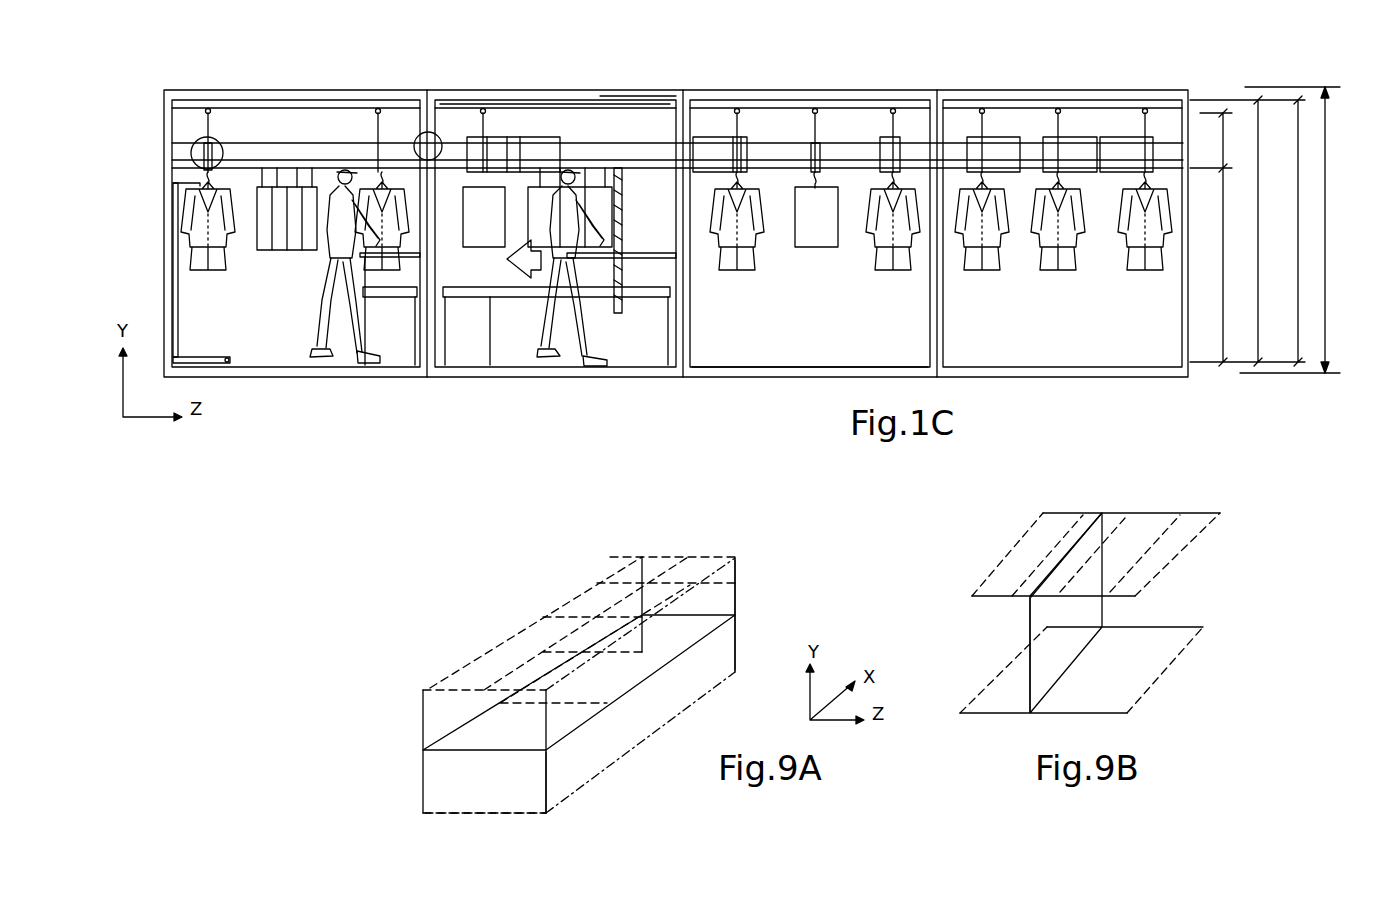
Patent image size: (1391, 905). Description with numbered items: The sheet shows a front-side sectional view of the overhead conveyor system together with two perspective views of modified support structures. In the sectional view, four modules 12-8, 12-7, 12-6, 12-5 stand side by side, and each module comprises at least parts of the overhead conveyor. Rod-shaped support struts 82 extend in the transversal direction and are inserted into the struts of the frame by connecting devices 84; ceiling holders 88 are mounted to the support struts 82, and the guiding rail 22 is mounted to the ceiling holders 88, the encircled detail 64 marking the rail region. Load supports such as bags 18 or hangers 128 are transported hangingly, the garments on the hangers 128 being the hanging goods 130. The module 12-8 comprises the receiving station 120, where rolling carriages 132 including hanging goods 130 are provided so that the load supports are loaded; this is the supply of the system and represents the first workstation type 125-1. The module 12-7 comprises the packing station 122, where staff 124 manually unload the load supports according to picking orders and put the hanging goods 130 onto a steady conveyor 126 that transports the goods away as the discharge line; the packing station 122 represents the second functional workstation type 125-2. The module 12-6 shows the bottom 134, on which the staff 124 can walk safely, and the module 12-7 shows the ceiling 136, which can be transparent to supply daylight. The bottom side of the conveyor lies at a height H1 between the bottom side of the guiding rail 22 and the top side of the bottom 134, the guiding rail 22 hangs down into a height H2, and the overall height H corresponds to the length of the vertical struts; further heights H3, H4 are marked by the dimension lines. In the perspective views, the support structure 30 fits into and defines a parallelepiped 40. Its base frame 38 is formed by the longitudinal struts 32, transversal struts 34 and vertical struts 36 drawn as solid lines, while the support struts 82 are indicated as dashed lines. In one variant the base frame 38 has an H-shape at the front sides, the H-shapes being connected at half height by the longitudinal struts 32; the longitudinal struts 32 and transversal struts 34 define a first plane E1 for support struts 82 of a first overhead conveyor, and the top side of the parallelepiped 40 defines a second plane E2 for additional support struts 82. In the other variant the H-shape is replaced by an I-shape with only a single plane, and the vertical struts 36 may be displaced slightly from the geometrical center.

In FIG. 1C, the module 12-8 is at (290, 88).
In FIG. 1C, the module 12-7 is at (556, 88).
In FIG. 1C, the module 12-6 is at (835, 88).
In FIG. 1C, the module 12-5 is at (1068, 88).
In FIG. 1C, the support strut 82 is at (355, 100).
In FIG. 9A, the support strut 82 is at (448, 690).
In FIG. 9B, the support strut 82 is at (1053, 547).
In FIG. 1C, the rail coupling detail 64 is at (191, 151).
In FIG. 1C, the ceiling holder 88 is at (215, 124).
In FIG. 1C, the guiding rail 22 is at (320, 143).
In FIG. 1C, the connecting device 84 is at (567, 110).
In FIG. 1C, the ceiling 136 is at (620, 110).
In FIG. 1C, the hanger 128 is at (742, 178).
In FIG. 1C, the bag 18 is at (266, 250).
In FIG. 1C, the staff 124 is at (327, 278).
In FIG. 1C, the hanging goods 130 is at (622, 220).
In FIG. 1C, the rolling carriage 132 is at (200, 350).
In FIG. 1C, the steady conveyor 126 is at (410, 357).
In FIG. 1C, the bottom 134 is at (830, 362).
In FIG. 1C, the receiving station 120 is at (300, 318).
In FIG. 1C, the packing station 122 is at (610, 332).
In FIG. 1C, the first workstation type 125-1 is at (343, 400).
In FIG. 1C, the second functional workstation type 125-2 is at (565, 392).
In FIG. 1C, the height H is at (1326, 195).
In FIG. 1C, the height H1 is at (1223, 338).
In FIG. 1C, the height H2 is at (1223, 158).
In FIG. 1C, the height dimension H3 is at (1258, 310).
In FIG. 1C, the height dimension H4 is at (1298, 158).
In FIG. 9A, the support structure 30 is at (644, 686).
In FIG. 9A, the longitudinal strut 32 is at (628, 691).
In FIG. 9B, the longitudinal strut 32 is at (1067, 677).
In FIG. 9A, the transversal strut 34 is at (480, 752).
In FIG. 9B, the transversal strut 34 is at (1203, 512).
In FIG. 9A, the vertical strut 36 is at (548, 790).
In FIG. 9B, the vertical strut 36 is at (1030, 632).
In FIG. 9A, the base frame 38 is at (742, 626).
In FIG. 9A, the parallelepiped 40 is at (470, 816).
In FIG. 9A, the first plane E1 is at (687, 653).
In FIG. 9A, the second plane E2 is at (553, 637).